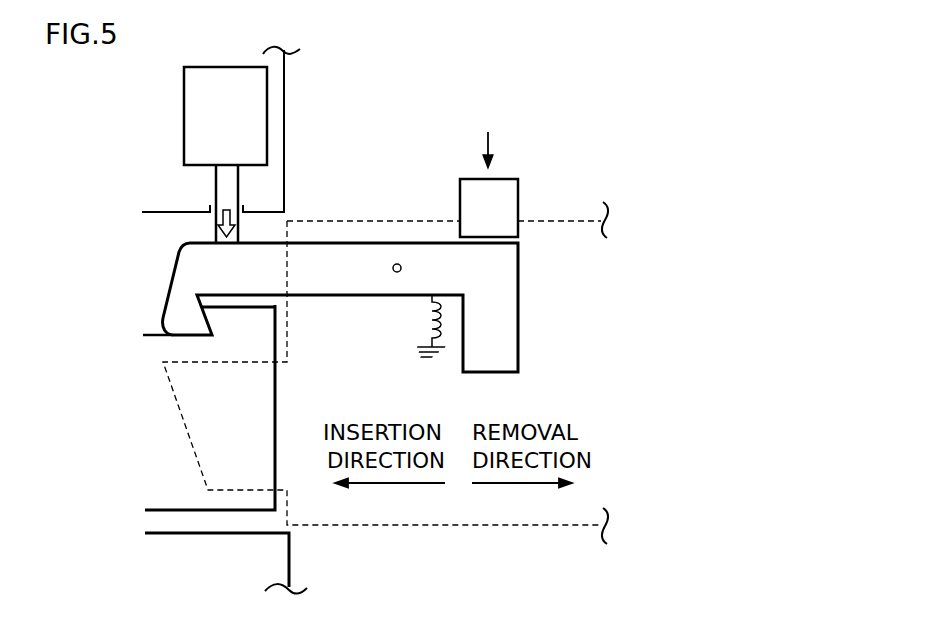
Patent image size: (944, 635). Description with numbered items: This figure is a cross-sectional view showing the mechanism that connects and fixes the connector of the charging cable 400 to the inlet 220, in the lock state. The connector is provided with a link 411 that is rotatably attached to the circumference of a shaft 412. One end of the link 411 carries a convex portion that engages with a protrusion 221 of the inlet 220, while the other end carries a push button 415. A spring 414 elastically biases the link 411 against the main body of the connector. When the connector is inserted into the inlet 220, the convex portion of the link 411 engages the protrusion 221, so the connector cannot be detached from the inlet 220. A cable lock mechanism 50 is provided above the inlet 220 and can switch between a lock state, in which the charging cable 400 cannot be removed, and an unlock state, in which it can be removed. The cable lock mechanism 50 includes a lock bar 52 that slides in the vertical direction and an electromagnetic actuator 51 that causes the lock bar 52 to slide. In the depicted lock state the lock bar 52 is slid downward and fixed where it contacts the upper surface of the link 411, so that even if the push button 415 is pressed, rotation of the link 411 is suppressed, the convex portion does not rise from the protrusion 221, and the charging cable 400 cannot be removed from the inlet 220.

The cable lock mechanism 50 is at (116, 100).
The electromagnetic actuator 51 is at (184, 115).
The lock bar 52 is at (215, 195).
The link 411 is at (164, 290).
The shaft 412 is at (397, 264).
The spring 414 is at (424, 323).
The push button 415 is at (507, 179).
The protrusion 221 is at (217, 317).
The inlet 220 is at (198, 512).
The charging cable 400 is at (494, 533).